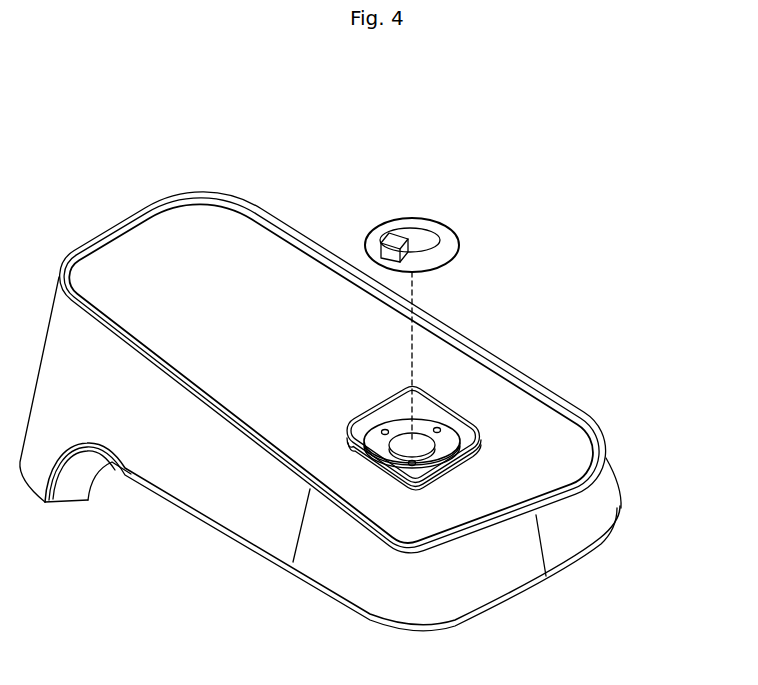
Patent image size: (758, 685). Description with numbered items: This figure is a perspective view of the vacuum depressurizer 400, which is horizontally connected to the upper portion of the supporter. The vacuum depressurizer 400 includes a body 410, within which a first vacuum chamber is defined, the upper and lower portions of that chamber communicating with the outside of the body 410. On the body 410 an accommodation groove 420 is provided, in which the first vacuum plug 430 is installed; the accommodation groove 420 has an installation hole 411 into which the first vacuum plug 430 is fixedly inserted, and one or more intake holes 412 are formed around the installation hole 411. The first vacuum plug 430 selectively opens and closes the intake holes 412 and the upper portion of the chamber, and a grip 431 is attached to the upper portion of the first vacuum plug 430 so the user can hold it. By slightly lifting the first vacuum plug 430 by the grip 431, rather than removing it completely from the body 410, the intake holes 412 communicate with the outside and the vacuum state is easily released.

The vacuum depressurizer 400 is at (153, 194).
The body 410 is at (218, 250).
The installation hole 411 is at (397, 457).
The intake holes 412 is at (442, 423).
The accommodation groove 420 is at (443, 447).
The first vacuum plug 430 is at (446, 240).
The grip 431 is at (382, 232).